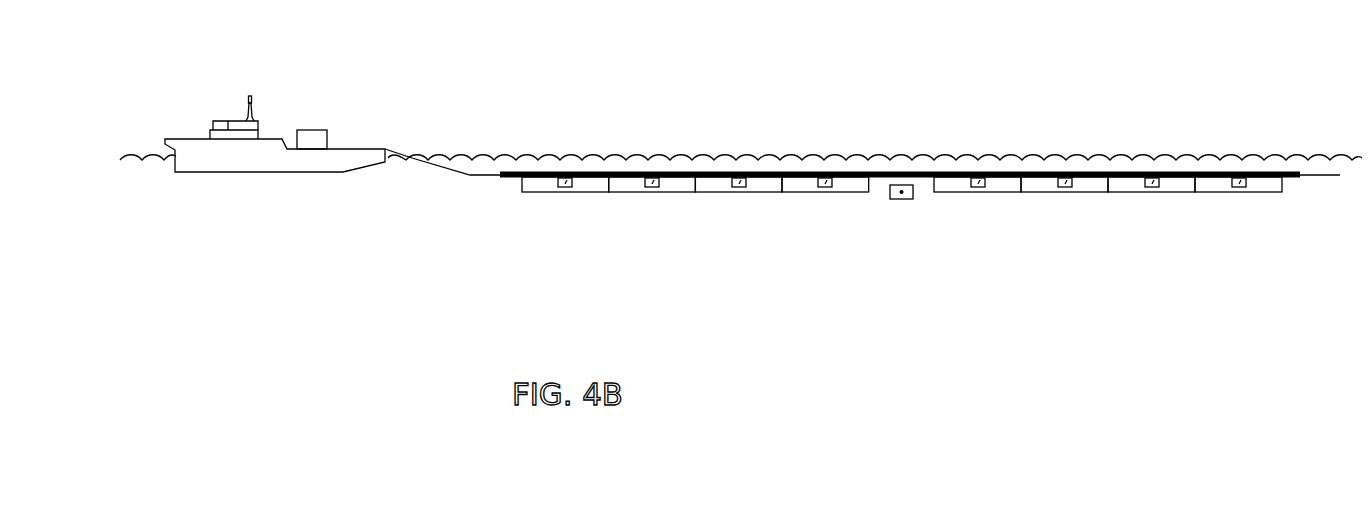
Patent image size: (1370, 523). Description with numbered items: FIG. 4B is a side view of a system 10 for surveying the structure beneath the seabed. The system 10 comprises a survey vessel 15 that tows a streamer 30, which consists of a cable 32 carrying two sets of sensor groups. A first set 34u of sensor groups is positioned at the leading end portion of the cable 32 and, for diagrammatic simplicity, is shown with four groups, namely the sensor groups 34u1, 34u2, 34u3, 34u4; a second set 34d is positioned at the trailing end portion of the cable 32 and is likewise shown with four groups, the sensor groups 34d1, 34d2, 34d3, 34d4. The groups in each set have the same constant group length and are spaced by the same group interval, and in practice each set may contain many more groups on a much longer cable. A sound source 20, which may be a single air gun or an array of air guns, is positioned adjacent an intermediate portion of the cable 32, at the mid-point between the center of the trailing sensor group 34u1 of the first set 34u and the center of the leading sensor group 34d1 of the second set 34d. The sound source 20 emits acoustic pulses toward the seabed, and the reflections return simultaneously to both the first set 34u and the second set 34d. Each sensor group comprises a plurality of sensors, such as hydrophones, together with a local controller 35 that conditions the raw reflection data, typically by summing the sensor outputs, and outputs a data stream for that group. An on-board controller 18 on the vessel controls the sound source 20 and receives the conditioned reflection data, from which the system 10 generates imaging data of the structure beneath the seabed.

The system 10 is at (257, 200).
The survey vessel 15 is at (195, 138).
The on-board controller 18 is at (317, 130).
The sound source 20 is at (902, 200).
The streamer 30 is at (1297, 185).
The cable 32 is at (502, 180).
The first set of sensor groups 34u is at (695, 264).
The trailing sensor group of the first set 34u1 is at (824, 195).
The sensor group of the first set 34u2 is at (737, 195).
The sensor group of the first set 34u3 is at (650, 195).
The sensor group of the first set 34u4 is at (563, 195).
The second set of sensor groups 34d is at (948, 210).
The leading sensor group of the second set 34d1 is at (976, 195).
The sensor group of the second set 34d2 is at (1063, 195).
The sensor group of the second set 34d3 is at (1150, 195).
The sensor group of the second set 34d4 is at (1238, 195).
The local controller 35 is at (568, 175).